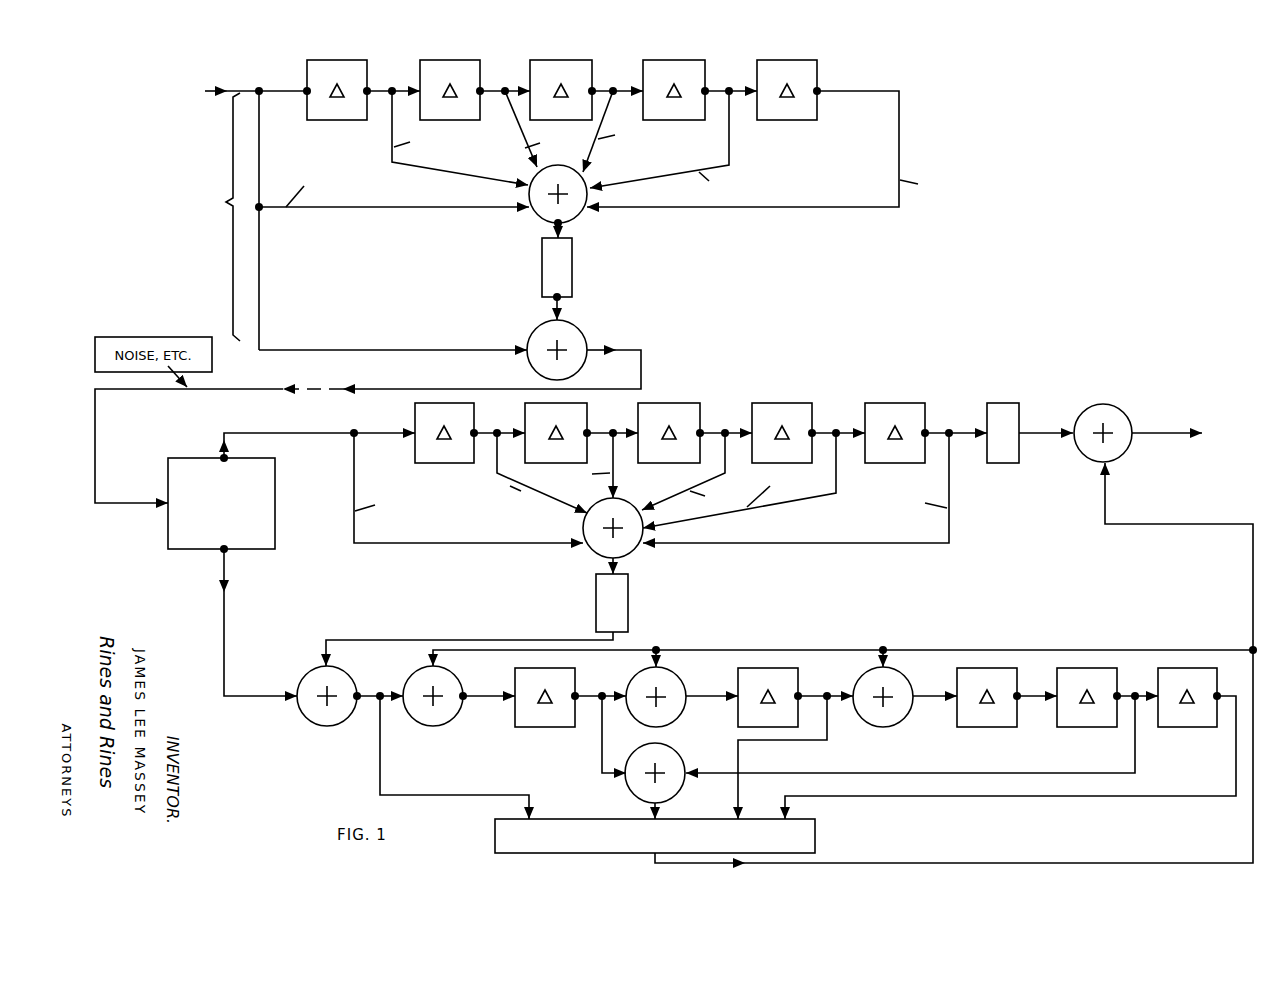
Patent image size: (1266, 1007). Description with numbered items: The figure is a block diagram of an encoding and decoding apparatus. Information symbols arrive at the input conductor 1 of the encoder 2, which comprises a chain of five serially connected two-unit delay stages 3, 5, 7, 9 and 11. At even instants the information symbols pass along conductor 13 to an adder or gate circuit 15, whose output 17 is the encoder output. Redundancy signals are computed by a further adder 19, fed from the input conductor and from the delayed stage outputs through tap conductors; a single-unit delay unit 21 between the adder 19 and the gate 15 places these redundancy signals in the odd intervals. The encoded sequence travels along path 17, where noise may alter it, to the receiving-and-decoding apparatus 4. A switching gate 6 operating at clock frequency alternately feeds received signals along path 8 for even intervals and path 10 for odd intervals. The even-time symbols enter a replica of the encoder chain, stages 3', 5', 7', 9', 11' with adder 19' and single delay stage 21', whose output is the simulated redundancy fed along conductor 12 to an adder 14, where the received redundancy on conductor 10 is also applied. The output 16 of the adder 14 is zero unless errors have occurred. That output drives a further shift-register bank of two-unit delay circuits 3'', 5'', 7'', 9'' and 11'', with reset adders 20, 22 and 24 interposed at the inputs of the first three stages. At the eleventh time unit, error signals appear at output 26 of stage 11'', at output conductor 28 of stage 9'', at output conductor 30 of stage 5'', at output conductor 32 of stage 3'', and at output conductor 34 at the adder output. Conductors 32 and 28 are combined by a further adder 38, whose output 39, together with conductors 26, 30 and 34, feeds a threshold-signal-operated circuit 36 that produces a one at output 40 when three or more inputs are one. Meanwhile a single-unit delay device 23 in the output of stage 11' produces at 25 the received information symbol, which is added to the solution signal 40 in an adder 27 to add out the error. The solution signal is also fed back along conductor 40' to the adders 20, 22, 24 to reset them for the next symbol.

The input conductor 1 is at (250, 88).
The encoder 2 is at (421, 239).
The shift register or time-delay stage 3 is at (361, 88).
The shift register or time-delay stage 5 is at (475, 88).
The shift register or time-delay stage 7 is at (586, 88).
The shift register or time-delay stage 9 is at (700, 88).
The shift register or time-delay stage 11 is at (743, 132).
The conductor 13 is at (259, 301).
The adder or gate circuit 15 is at (575, 328).
The encoder output / transmission path 17 is at (641, 366).
The adder 19 is at (576, 200).
The delay unit 21 is at (576, 279).
The receiving-and-decoding apparatus 4 is at (497, 580).
The switching gate 6 is at (277, 512).
The path 8 is at (308, 431).
The conductor or path 10 is at (225, 631).
The conductor 12 is at (361, 640).
The adder 14 is at (308, 674).
The output of adder 14 16 is at (368, 694).
The adder circuit 20 is at (450, 722).
The adder circuit 22 is at (680, 673).
The adder circuit 24 is at (905, 673).
The single-unit delay device 23 is at (1020, 412).
The output of delay device 23 25 is at (1040, 435).
The adder 27 is at (1113, 411).
The delay stage 3' is at (470, 429).
The delay stage 5' is at (581, 429).
The delay stage 7' is at (695, 429).
The delay stage 9' is at (808, 429).
The delay stage 11' is at (926, 428).
The adder 19' is at (618, 524).
The single delay stage 21' is at (636, 603).
The two-unit delay circuit 3'' is at (570, 693).
The two-unit delay circuit 5'' is at (795, 693).
The two-unit delay circuit 7'' is at (1007, 693).
The two-unit delay circuit 9'' is at (1107, 693).
The two-unit delay circuit 11'' is at (1205, 692).
The output conductor 26 is at (1203, 796).
The output conductor 28 is at (1050, 773).
The output conductor 30 is at (835, 734).
The output conductor 32 is at (600, 746).
The output conductor 34 is at (455, 795).
The threshold-signal-operated circuit 36 is at (817, 830).
The adder 38 is at (676, 750).
The output of adder 38 39 is at (660, 809).
The output / solution signal 40 is at (954, 663).
The conductor 40' is at (845, 640).